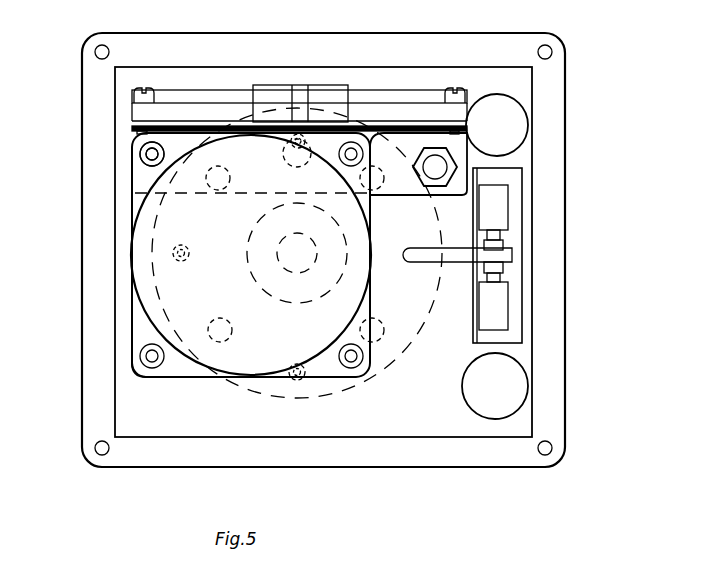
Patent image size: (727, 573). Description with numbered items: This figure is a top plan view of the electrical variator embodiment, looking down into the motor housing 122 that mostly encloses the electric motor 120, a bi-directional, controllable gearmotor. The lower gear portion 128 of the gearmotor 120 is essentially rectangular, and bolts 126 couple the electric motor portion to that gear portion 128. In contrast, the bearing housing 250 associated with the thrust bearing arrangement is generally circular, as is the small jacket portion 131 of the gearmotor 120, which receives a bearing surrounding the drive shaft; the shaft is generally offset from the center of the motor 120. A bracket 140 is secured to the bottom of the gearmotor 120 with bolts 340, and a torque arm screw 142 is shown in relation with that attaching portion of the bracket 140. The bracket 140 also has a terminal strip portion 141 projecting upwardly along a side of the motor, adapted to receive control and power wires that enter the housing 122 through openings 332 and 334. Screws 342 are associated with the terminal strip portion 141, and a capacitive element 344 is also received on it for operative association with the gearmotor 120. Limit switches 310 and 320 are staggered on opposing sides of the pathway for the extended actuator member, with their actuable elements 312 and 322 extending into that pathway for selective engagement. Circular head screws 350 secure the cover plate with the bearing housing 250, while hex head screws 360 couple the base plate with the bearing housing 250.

The motor housing 122 is at (452, 33).
The opening 332 is at (519, 101).
The opening 334 is at (468, 409).
The terminal strip portion 141 is at (201, 102).
The screws 342 is at (142, 90).
The capacitive element 344 is at (335, 85).
The bolts 126 is at (343, 349).
The gear portion 128 is at (148, 378).
The bolts 340 is at (140, 153).
The torque arm screw 142 is at (451, 152).
The electric motor 120 is at (140, 203).
The jacket portion 131 is at (284, 305).
The bearing housing 250 is at (392, 365).
The bracket 140 is at (260, 192).
The hex head screws 360 is at (212, 150).
The circular head screws 350 is at (293, 168).
The limit switch 310 is at (508, 198).
The actuable element 312 is at (503, 245).
The actuable element 322 is at (503, 267).
The limit switch 320 is at (508, 304).